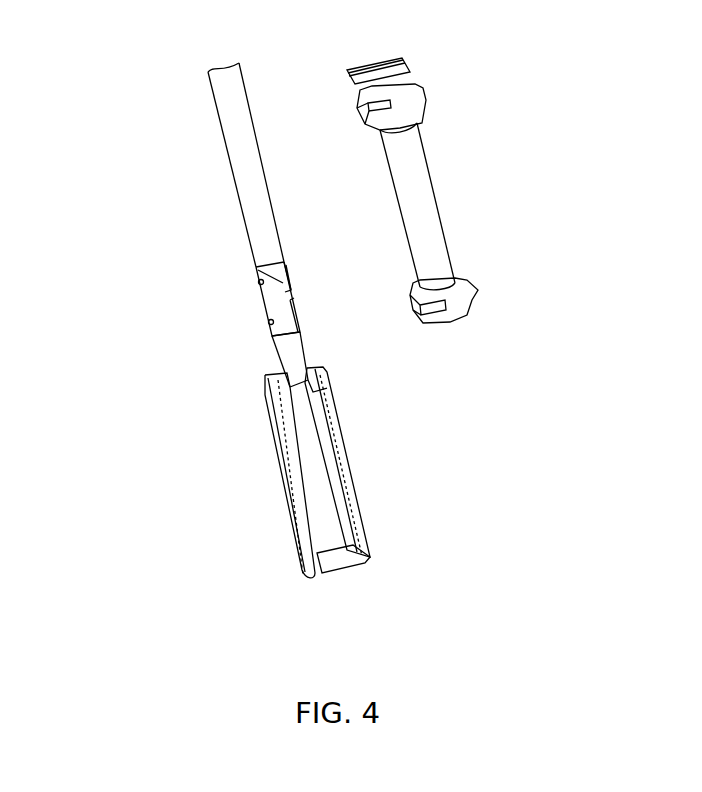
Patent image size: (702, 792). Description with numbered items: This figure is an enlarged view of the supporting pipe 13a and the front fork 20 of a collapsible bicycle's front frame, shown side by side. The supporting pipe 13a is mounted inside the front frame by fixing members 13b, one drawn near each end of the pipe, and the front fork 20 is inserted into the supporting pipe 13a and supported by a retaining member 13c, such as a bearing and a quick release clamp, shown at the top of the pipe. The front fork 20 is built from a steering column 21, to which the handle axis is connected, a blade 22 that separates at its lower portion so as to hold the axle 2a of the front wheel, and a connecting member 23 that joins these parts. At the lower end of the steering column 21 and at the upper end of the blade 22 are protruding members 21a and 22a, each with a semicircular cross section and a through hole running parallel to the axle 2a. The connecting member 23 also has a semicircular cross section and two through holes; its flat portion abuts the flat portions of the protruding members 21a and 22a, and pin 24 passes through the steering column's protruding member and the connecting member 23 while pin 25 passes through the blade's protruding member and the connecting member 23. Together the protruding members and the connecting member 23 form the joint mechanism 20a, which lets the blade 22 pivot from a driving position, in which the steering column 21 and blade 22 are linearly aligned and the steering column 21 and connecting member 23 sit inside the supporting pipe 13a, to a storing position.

The front fork 20 is at (135, 380).
The joint mechanism 20a is at (225, 358).
The steering column 21 is at (233, 148).
The protruding member 21a is at (287, 277).
The blade 22 is at (333, 418).
The protruding member 22a is at (297, 320).
The connecting member 23 is at (260, 302).
The pin 24 is at (260, 283).
The pin 25 is at (270, 323).
The axle 2a is at (342, 563).
The supporting pipe 13a is at (418, 187).
The fixing member 13b is at (418, 110).
The retaining member 13c is at (405, 52).